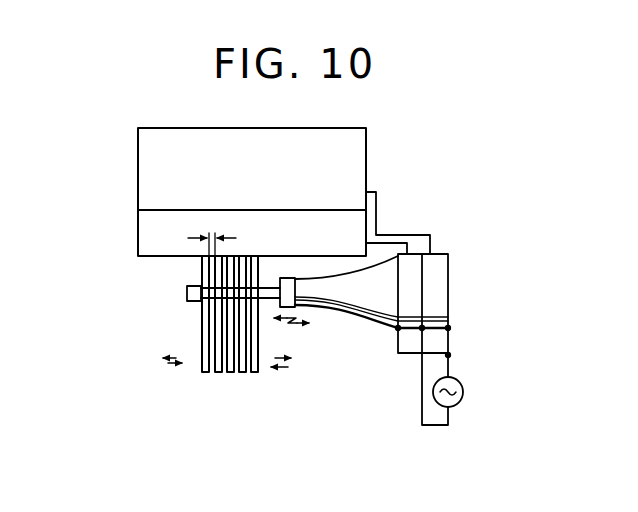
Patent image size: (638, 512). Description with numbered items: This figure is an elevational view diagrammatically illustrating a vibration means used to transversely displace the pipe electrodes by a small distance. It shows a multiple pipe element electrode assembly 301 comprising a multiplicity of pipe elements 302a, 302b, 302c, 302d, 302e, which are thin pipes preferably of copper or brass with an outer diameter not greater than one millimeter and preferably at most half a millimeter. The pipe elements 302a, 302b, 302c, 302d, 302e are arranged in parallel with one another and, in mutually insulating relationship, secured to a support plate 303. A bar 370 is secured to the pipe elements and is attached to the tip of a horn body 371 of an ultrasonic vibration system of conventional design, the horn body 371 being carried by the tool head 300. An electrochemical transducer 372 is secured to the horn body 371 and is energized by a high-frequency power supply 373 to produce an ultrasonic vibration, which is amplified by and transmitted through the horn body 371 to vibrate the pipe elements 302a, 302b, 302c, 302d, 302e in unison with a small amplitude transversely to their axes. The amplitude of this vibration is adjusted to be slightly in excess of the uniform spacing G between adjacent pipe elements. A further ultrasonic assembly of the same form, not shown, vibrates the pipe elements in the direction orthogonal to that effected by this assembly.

The tool head 300 is at (368, 160).
The support plate 303 is at (142, 223).
The multiple pipe element electrode assembly 301 is at (245, 353).
The pipe element 302a is at (204, 372).
The pipe element 302b is at (217, 373).
The pipe element 302c is at (229, 373).
The pipe element 302d is at (246, 373).
The pipe element 302e is at (258, 371).
The bar 370 is at (187, 292).
The horn body 371 is at (353, 308).
The electrochemical transducer 372 is at (448, 288).
The high-frequency power supply 373 is at (462, 398).
The uniform spacing G is at (212, 234).